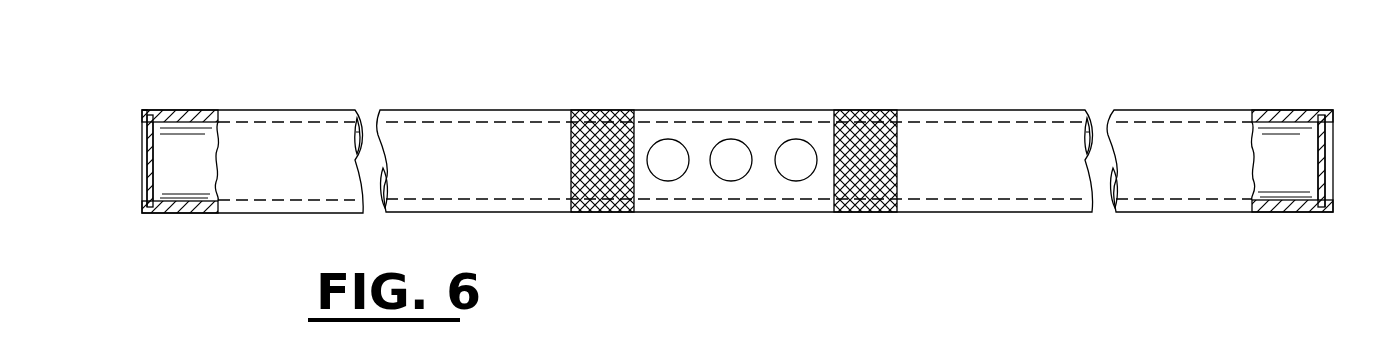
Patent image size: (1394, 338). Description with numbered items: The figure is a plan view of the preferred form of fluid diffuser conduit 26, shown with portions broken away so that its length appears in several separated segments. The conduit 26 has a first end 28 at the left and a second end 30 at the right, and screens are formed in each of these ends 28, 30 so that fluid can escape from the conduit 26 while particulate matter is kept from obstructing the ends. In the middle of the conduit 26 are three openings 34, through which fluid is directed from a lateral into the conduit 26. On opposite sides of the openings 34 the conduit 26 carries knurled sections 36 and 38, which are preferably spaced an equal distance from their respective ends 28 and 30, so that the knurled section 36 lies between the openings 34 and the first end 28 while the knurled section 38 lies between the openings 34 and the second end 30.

The conduit 26 is at (507, 96).
The first end 28 is at (168, 96).
The second end 30 is at (1281, 96).
The opening 34 is at (660, 167).
The knurled section 36 is at (600, 110).
The knurled section 38 is at (858, 110).